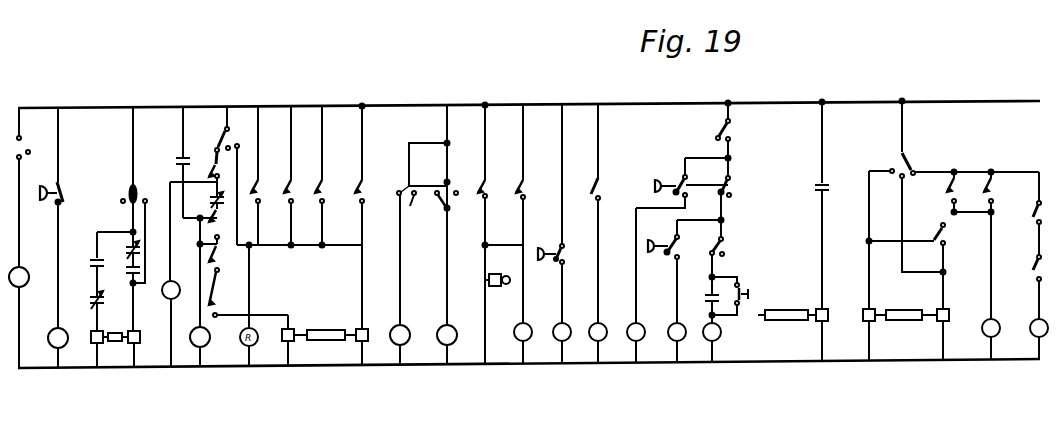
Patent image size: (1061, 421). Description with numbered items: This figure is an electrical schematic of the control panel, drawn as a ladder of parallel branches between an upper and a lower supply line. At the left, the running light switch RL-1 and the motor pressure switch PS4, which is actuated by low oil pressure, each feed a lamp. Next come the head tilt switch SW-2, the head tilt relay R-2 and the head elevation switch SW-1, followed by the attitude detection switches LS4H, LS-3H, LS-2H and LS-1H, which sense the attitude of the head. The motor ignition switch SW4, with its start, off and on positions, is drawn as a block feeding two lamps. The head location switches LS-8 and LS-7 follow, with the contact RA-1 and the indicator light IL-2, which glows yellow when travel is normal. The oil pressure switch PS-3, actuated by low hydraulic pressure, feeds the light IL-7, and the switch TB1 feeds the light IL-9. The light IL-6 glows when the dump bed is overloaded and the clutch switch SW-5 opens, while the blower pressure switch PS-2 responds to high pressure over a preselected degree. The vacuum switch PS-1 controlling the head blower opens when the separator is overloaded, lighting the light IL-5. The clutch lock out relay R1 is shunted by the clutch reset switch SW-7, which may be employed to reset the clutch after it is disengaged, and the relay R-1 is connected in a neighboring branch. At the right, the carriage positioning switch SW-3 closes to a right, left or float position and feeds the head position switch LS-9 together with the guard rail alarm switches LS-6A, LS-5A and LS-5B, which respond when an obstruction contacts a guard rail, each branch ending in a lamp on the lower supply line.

The running light switch RL-1 is at (29, 238).
The pressure switch PS4 is at (64, 238).
The head tilt switch SW-2 is at (118, 237).
The head tilt relay R-2 is at (186, 237).
The head elevation switch SW-1 is at (241, 212).
The attitude detection switch LS4H is at (270, 175).
The attitude detection switch LS-3H is at (305, 175).
The attitude detection switch LS-2H is at (337, 175).
The attitude detection switch LS-1H is at (378, 217).
The motor ignition switch SW4 is at (427, 235).
The head location switch LS-8 is at (500, 234).
The relay contact RA-1 is at (482, 280).
The head location switch LS-7 is at (535, 213).
The indicator light IL-2 is at (514, 343).
The oil pressure switch PS-3 is at (565, 213).
The indicator light IL-7 is at (551, 343).
The switch TB1 is at (608, 213).
The indicator light IL-9 is at (588, 343).
The indicator light IL-6 is at (625, 285).
The pressure switch PS-2 is at (682, 183).
The clutch switch SW-5 is at (726, 179).
The vacuum switch PS-1 is at (683, 271).
The indicator light IL-5 is at (666, 342).
The clutch lock out relay R1 is at (705, 308).
The clutch reset switch SW-7 is at (745, 294).
The clutch lock out relay R-1 is at (810, 231).
The carriage positioning switch SW-3 is at (954, 187).
The head position switch LS-9 is at (922, 291).
The guard rail alarm switch LS-6A is at (950, 192).
The guard rail alarm switch LS-5A is at (981, 265).
The guard rail alarm switch LS-5B is at (1021, 265).